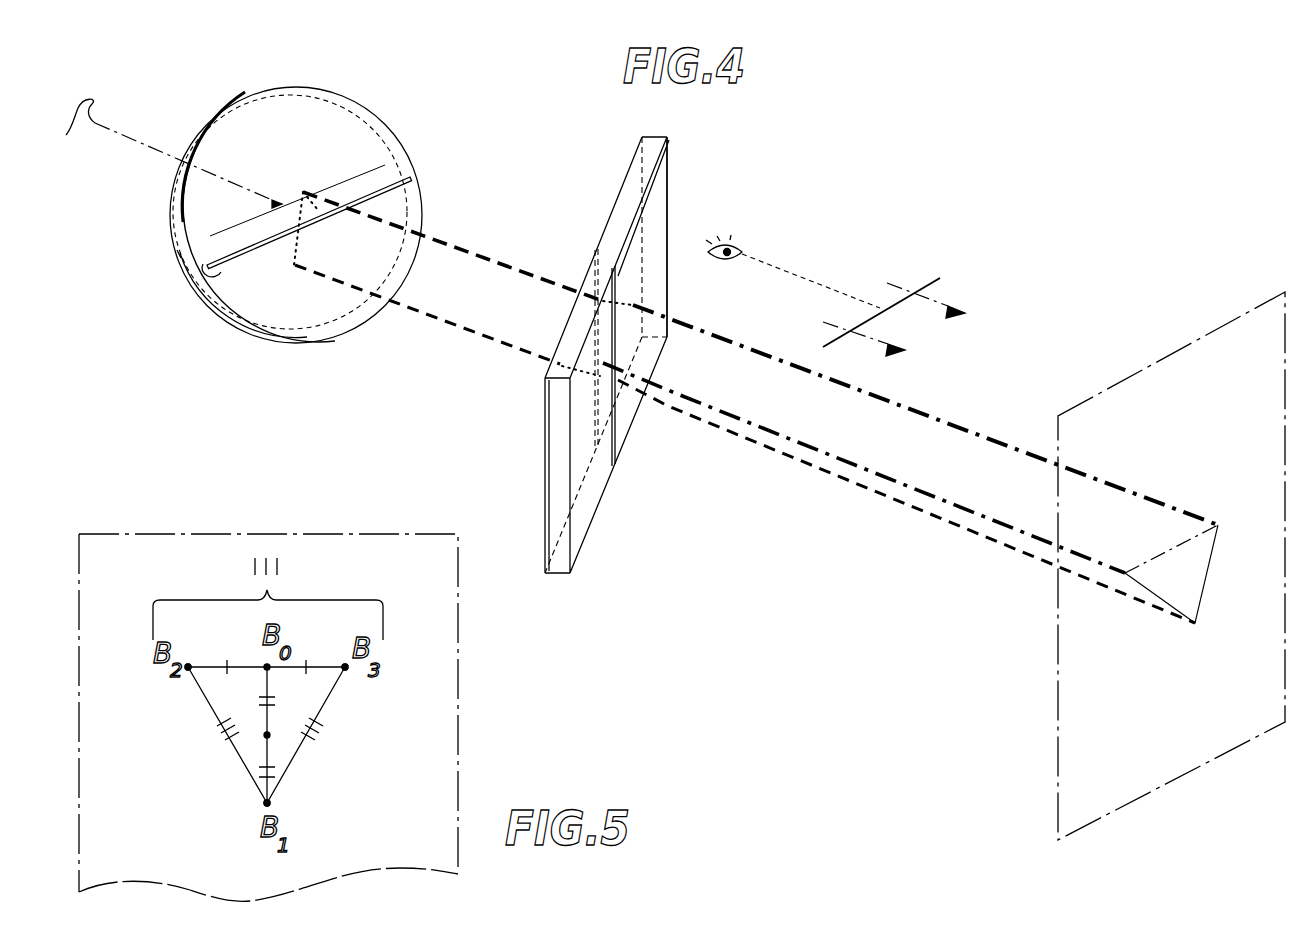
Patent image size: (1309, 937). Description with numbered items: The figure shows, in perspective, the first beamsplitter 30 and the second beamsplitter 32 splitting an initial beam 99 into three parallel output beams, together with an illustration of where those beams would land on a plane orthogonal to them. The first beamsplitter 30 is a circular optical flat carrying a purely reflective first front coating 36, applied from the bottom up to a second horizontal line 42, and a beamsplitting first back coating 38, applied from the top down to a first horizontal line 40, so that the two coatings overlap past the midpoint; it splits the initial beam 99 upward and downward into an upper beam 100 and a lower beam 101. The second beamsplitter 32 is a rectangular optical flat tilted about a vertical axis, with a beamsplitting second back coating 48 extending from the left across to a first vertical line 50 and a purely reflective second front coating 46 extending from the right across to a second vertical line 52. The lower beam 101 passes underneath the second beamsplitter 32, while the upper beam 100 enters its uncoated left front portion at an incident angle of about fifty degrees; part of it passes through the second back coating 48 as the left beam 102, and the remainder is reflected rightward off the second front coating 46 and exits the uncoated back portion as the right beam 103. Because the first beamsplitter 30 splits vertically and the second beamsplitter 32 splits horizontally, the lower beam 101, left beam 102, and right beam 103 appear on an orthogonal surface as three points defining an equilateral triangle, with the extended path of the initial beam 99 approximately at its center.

In FIG. 4, the first beamsplitter 30 is at (246, 82).
In FIG. 4, the second beamsplitter 32 is at (772, 184).
In FIG. 4, the first front coating 36 is at (190, 302).
In FIG. 4, the first back coating 38 is at (388, 135).
In FIG. 4, the first horizontal line 40 is at (218, 264).
In FIG. 4, the second horizontal line 42 is at (216, 233).
In FIG. 4, the second front coating 46 is at (540, 400).
In FIG. 4, the second back coating 48 is at (662, 190).
In FIG. 4, the first vertical line 50 is at (616, 466).
In FIG. 4, the second vertical line 52 is at (604, 262).
In FIG. 4, the initial beam 99 is at (160, 160).
In FIG. 5, the initial beam 99 is at (274, 741).
In FIG. 4, the upper beam 100 is at (502, 262).
In FIG. 4, the lower beam 101 is at (452, 320).
In FIG. 5, the lower beam 101 is at (284, 809).
In FIG. 4, the left beam 102 is at (916, 414).
In FIG. 5, the left beam 102 is at (184, 678).
In FIG. 4, the right beam 103 is at (806, 445).
In FIG. 5, the right beam 103 is at (354, 680).